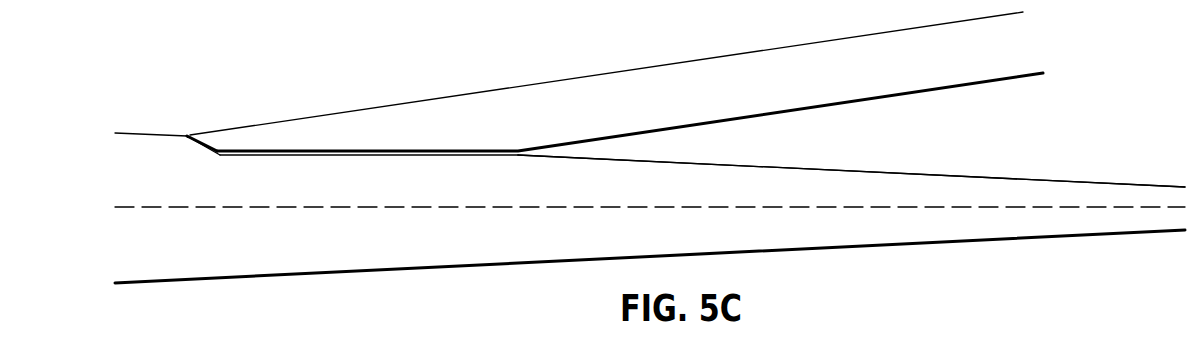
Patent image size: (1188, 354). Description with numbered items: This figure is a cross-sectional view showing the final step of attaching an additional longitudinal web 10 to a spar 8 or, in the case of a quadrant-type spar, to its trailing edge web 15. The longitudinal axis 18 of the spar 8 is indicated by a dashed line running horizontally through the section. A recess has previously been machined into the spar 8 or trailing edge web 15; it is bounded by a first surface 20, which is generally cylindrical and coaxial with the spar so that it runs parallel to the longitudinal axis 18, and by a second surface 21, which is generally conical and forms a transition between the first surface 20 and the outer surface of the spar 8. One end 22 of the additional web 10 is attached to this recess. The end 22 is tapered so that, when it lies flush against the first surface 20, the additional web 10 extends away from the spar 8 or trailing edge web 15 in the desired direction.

The additional longitudinal web 10 is at (458, 95).
The second surface 21 is at (202, 148).
The end of the additional longitudinal web 22 is at (297, 154).
The first surface 20 is at (408, 157).
The spar 8 is at (833, 167).
The trailing edge web 15 is at (851, 171).
The longitudinal axis 18 is at (352, 206).